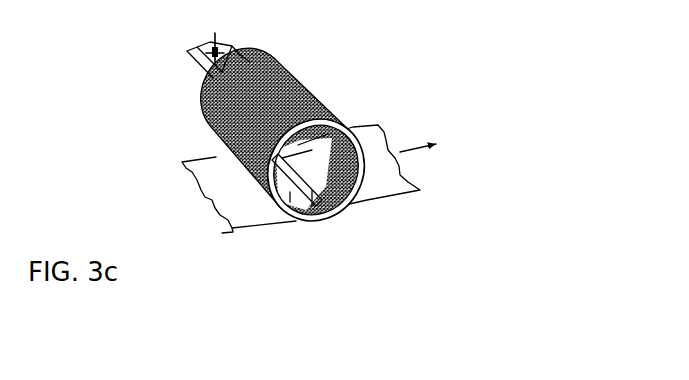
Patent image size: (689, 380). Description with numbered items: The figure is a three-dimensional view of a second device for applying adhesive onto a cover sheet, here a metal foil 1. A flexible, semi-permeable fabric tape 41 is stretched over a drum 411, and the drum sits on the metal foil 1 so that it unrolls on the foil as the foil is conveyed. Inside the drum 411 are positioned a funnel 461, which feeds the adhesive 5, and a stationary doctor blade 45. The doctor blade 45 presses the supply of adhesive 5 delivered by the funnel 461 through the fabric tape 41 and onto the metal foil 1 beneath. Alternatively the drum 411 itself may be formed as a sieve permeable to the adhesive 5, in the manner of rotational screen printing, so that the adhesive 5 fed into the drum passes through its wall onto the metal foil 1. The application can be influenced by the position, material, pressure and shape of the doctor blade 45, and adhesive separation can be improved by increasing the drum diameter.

The metal foil 1 is at (200, 198).
The adhesive 5 is at (377, 158).
The fabric tape 41 is at (308, 62).
The drum 411 is at (362, 191).
The doctor blade 45 is at (299, 209).
The funnel 461 is at (183, 50).